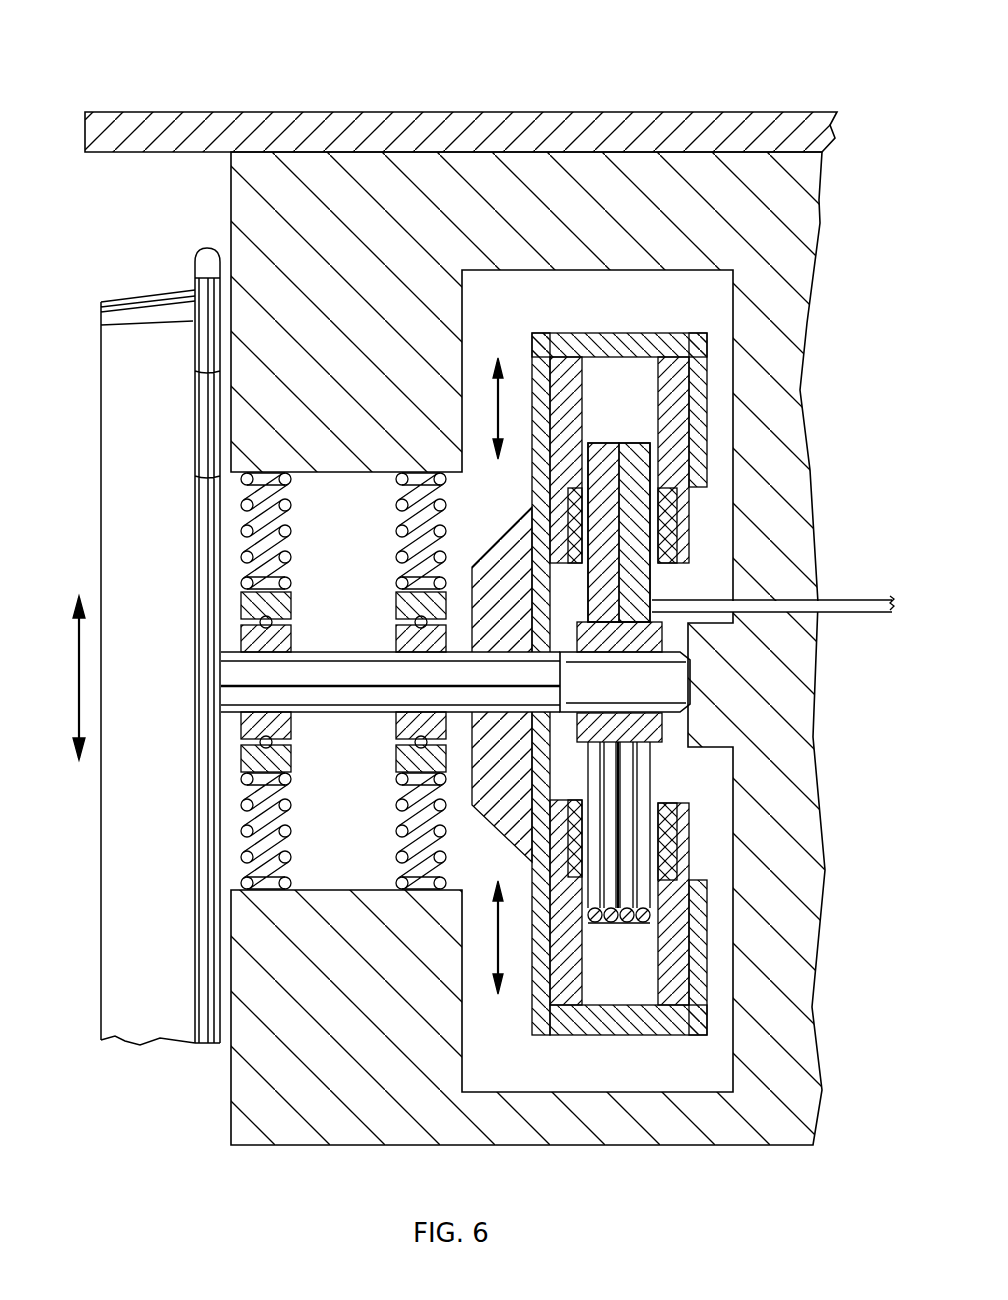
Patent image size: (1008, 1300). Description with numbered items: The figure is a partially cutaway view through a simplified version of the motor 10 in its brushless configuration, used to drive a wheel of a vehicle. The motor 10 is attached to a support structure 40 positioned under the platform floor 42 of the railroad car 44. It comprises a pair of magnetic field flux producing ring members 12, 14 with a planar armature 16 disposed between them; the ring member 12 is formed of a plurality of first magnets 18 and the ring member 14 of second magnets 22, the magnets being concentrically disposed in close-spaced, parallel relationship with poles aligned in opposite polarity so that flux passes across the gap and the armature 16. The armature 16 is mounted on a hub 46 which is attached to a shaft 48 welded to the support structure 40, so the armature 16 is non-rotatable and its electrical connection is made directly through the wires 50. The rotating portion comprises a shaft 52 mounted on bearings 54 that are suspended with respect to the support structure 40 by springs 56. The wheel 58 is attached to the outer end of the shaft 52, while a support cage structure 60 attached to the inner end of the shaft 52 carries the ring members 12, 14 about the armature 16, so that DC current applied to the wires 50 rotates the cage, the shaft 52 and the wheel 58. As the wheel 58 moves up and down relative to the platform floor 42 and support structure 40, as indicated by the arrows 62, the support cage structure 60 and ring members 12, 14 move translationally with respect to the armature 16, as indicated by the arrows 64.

The motor 10 is at (708, 545).
The ring member 12 is at (566, 352).
The ring member 14 is at (681, 352).
The planar armature 16 is at (640, 781).
The first magnets 18 is at (572, 564).
The second magnets 22 is at (668, 564).
The support structure 40 is at (812, 252).
The platform floor 42 is at (641, 120).
The railroad car 44 is at (532, 105).
The hub 46 is at (660, 742).
The shaft 48 is at (665, 681).
The wires 50 is at (848, 590).
The shaft 52 is at (354, 696).
The bearings 54 is at (292, 606).
The springs 56 is at (392, 507).
The wheel 58 is at (148, 306).
The support cage structure 60 is at (510, 541).
The arrows 62 is at (78, 682).
The arrows 64 is at (496, 412).